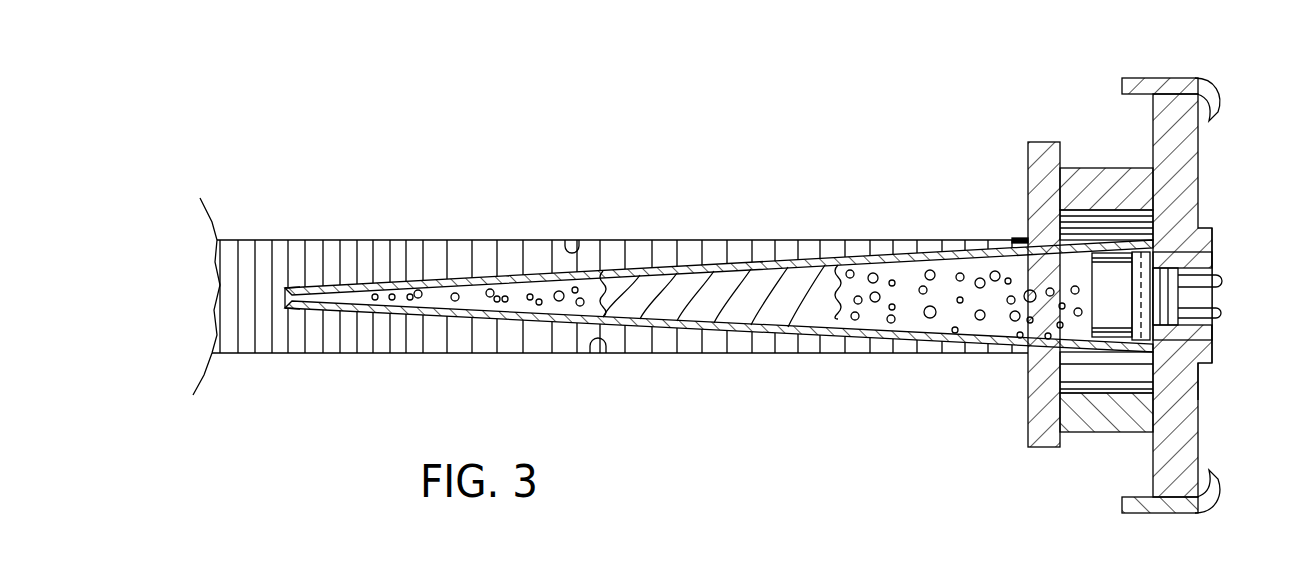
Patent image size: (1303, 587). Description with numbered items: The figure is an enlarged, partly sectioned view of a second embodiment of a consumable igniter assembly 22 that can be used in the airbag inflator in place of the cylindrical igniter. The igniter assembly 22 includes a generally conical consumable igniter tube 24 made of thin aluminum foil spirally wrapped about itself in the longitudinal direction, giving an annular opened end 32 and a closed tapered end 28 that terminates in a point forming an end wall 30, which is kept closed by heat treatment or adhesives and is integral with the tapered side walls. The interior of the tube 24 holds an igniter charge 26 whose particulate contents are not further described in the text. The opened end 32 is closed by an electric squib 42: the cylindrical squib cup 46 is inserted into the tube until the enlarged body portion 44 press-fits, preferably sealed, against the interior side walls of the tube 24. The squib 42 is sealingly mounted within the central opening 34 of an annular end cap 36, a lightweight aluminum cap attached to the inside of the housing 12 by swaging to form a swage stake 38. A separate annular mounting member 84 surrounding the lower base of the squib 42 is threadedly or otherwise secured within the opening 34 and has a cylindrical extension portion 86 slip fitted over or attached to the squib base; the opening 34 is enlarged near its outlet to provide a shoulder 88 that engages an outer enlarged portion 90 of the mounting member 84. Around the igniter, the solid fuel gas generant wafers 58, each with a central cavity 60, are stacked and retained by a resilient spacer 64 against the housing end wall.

The housing 12 is at (1147, 517).
The consumable igniter assembly 22 is at (714, 239).
The igniter tube 24 is at (950, 343).
The beads 26 is at (928, 280).
The closed tapered end 28 is at (285, 312).
The end wall 30 is at (286, 292).
The opened end 32 is at (1123, 240).
The central opening 34 is at (1156, 256).
The annular end cap 36 is at (1193, 143).
The swage stake 38 is at (1203, 513).
The electric squib 42 is at (1124, 309).
The enlarged body portion 44 is at (1145, 348).
The squib cup 46 is at (1086, 345).
The wafers 58 is at (1028, 425).
The central cavity 60 is at (578, 246).
The resilient spacer 64 is at (1073, 182).
The annular mounting member 84 is at (1240, 276).
The cylindrical extension portion 86 is at (1210, 306).
The shoulder 88 is at (1203, 390).
The outer enlarged portion 90 is at (1213, 356).